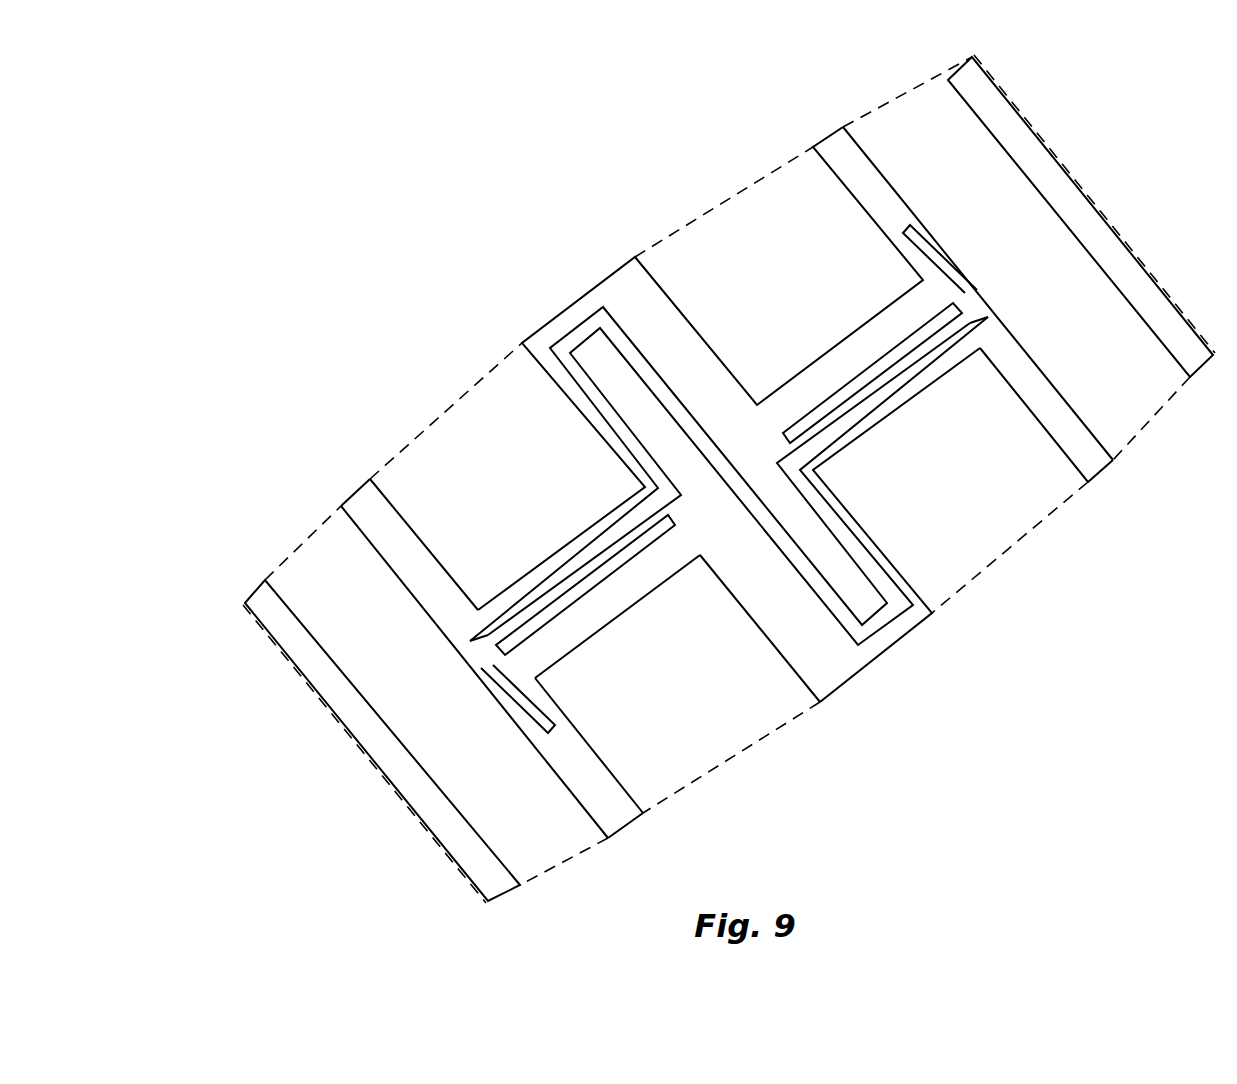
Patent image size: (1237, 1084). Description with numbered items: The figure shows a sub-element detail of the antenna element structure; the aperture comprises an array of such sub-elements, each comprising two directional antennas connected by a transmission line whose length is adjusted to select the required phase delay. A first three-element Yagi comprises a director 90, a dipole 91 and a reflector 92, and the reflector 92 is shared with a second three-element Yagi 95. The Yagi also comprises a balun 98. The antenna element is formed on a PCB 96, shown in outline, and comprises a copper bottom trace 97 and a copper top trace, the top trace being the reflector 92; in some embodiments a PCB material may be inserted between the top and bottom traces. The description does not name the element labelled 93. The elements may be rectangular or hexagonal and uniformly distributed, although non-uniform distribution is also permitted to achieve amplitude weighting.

The director 90 is at (250, 583).
The dipole 91 is at (352, 490).
The reflector 92 is at (630, 456).
The third electrode 93 is at (598, 271).
The second three-element Yagi 95 is at (1098, 200).
The PCB 96 is at (1148, 434).
The copper bottom trace 97 is at (776, 666).
The balun 98 is at (582, 634).